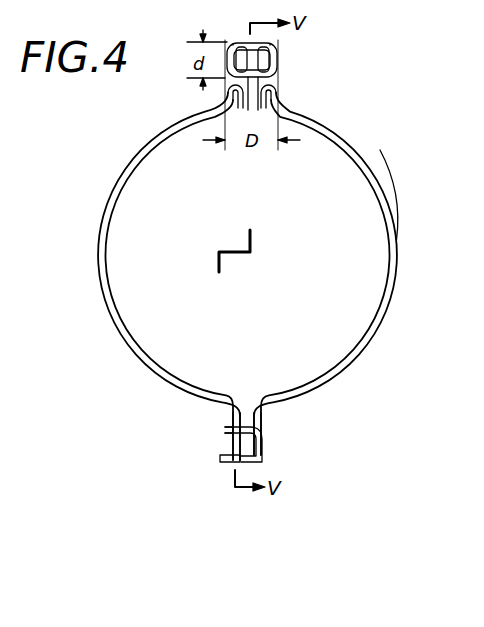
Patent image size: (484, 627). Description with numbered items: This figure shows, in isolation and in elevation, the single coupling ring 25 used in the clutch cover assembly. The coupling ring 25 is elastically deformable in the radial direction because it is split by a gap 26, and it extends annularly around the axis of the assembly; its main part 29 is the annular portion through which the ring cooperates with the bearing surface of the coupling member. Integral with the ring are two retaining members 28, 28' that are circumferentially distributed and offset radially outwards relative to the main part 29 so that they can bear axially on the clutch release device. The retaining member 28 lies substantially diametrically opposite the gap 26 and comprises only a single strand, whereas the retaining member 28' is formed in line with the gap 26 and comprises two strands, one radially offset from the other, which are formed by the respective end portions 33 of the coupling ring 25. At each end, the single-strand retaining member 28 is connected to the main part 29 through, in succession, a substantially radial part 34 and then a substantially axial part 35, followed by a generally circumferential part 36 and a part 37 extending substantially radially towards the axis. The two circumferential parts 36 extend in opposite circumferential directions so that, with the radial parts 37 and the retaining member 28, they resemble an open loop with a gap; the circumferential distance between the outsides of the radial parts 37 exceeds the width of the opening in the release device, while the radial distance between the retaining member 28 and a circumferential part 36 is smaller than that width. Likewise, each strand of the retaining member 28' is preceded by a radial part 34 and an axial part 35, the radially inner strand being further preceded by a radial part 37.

The coupling ring 25 is at (105, 192).
The main part 29 is at (386, 178).
The gap 26 is at (248, 405).
The retaining member 28 is at (252, 86).
The retaining member 28' is at (194, 436).
The end portions 33 is at (221, 458).
The radial part 34 is at (222, 114).
The axial part 35 is at (244, 45).
The circumferential part 36 is at (233, 46).
The radial part 37 is at (228, 70).